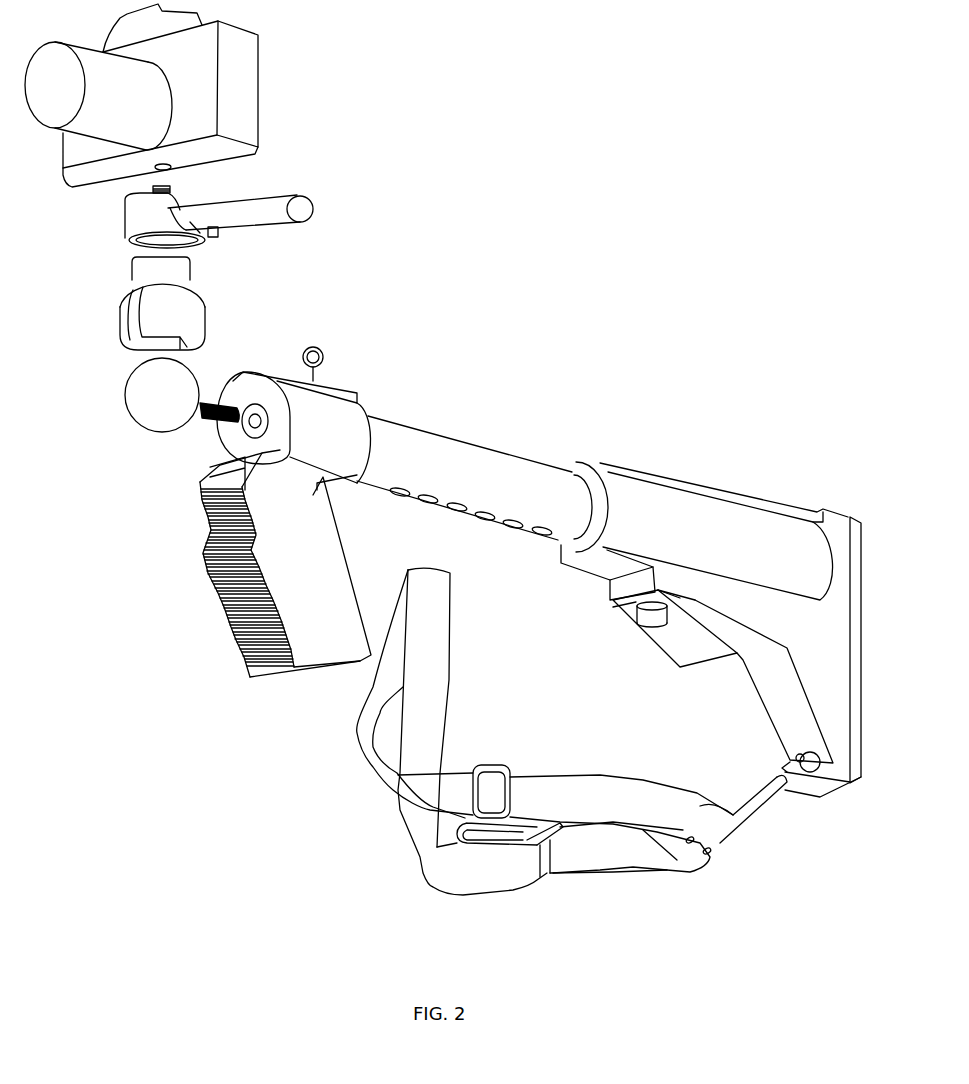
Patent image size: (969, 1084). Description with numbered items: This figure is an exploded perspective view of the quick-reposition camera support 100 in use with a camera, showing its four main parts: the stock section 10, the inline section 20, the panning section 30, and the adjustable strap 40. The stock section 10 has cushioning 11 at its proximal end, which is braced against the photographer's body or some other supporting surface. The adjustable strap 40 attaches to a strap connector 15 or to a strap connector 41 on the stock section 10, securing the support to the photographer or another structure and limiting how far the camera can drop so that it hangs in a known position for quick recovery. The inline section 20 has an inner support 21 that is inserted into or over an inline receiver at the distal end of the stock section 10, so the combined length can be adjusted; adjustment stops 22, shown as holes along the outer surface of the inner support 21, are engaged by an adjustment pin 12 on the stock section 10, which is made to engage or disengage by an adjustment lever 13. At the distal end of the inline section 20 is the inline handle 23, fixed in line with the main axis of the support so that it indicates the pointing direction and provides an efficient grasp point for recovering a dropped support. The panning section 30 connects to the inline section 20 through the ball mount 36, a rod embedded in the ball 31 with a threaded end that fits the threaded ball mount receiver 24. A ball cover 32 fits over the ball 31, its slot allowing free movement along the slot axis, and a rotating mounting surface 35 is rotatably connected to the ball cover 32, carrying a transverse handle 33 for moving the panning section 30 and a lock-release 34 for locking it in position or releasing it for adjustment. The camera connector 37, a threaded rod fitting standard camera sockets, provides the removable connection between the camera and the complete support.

The quick-reposition camera support 100 is at (652, 260).
The stock section 10 is at (745, 449).
The cushioning 11 is at (856, 522).
The adjustment pin 12 is at (636, 620).
The adjustment lever 13 is at (680, 654).
The strap connector 15 is at (801, 776).
The inline section 20 is at (392, 372).
The inner support 21 is at (496, 470).
The adjustment stops 22 is at (456, 510).
The inline handle 23 is at (332, 591).
The ball mount receiver 24 is at (248, 428).
The panning section 30 is at (92, 285).
The ball 31 is at (142, 387).
The ball cover 32 is at (120, 330).
The transverse handle 33 is at (306, 205).
The lock-release 34 is at (220, 236).
The rotating mounting surface 35 is at (125, 222).
The ball mount 36 is at (210, 399).
The camera connector 37 is at (172, 188).
The adjustable strap 40 is at (593, 757).
The strap connector 41 is at (317, 351).